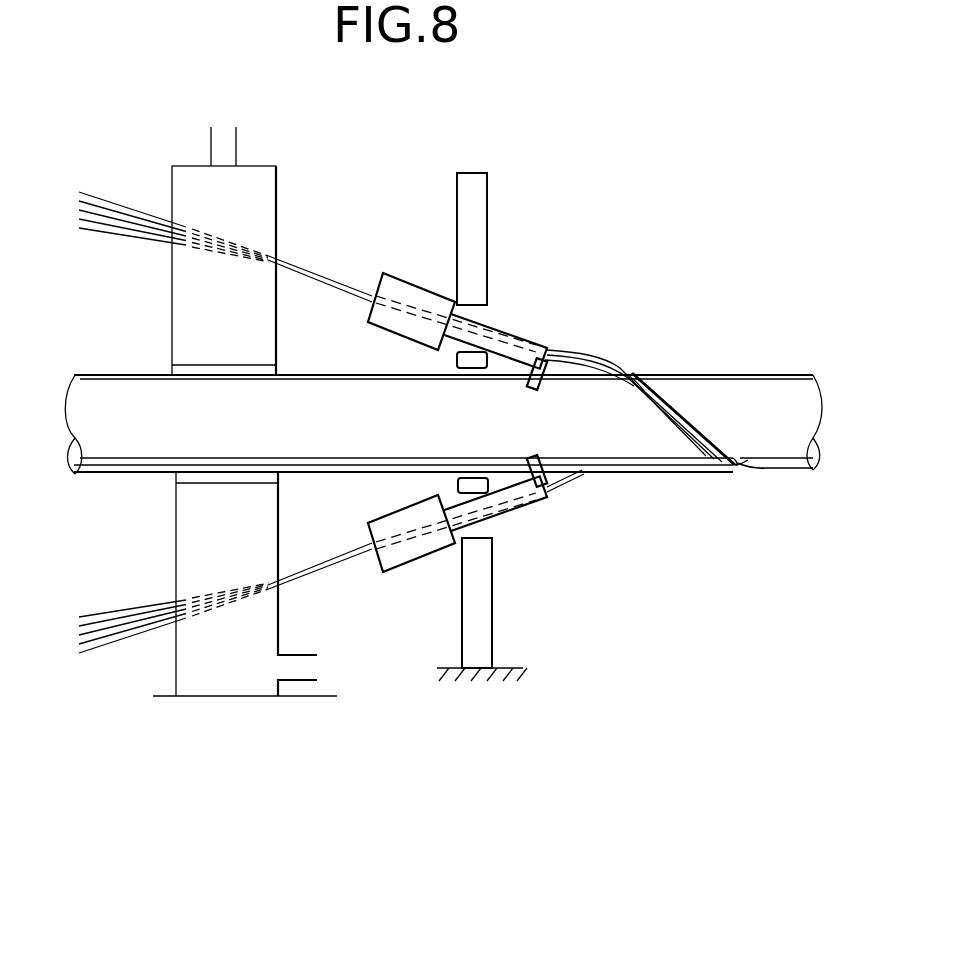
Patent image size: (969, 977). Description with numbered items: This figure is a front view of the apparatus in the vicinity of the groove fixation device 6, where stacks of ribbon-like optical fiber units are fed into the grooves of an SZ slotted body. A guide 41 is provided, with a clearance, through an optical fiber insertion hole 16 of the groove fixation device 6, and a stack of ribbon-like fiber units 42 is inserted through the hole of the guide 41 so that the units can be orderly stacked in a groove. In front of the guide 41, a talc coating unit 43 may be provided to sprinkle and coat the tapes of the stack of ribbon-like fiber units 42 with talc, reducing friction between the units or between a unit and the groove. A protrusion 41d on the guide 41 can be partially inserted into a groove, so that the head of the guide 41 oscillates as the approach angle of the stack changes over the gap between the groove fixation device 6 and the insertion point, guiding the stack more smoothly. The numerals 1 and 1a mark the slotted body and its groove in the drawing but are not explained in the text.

The tube 1 is at (114, 458).
The oblique slit in tube 1a is at (735, 470).
The groove fixation device 6 is at (488, 207).
The optical fiber insertion hole 16 is at (488, 315).
The guide 41 is at (421, 298).
The protrusion 41d is at (570, 368).
The stack of ribbon-like fiber units 42 is at (326, 274).
The talc coating unit 43 is at (254, 168).